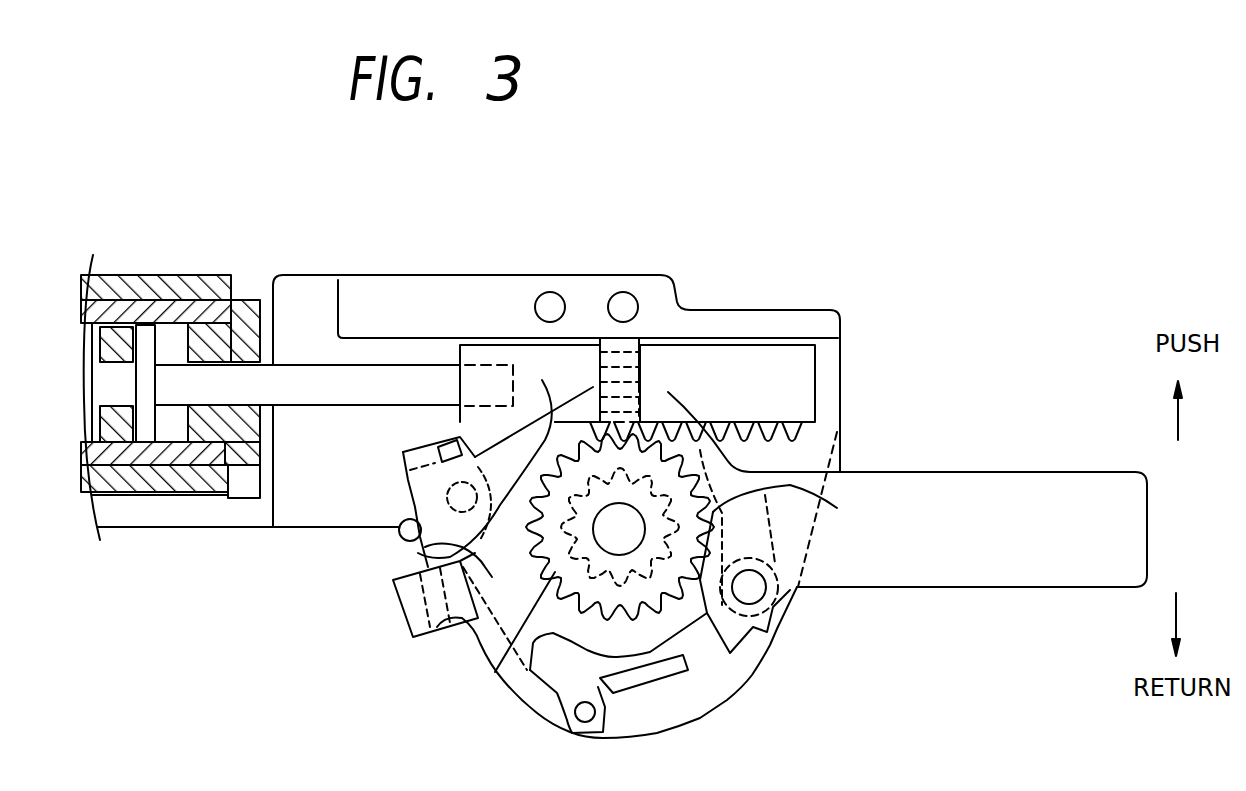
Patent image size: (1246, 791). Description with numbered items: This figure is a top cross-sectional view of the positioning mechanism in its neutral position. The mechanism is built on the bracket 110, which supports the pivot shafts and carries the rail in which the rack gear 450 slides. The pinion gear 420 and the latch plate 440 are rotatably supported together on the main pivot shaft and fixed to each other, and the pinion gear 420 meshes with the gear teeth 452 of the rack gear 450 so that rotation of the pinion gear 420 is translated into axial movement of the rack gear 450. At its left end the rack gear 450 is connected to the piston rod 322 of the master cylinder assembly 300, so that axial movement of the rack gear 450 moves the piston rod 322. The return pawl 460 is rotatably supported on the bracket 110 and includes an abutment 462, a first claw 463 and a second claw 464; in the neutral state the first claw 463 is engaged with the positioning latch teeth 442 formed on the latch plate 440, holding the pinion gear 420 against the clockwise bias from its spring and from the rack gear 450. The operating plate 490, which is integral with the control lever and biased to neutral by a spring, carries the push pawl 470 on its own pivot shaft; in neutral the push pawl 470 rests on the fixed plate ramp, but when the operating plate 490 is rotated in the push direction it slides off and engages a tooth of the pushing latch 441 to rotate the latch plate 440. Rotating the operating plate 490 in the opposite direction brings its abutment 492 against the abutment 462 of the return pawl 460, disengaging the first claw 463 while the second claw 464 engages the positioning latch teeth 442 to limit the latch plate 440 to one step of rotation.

The master cylinder assembly 300 is at (160, 548).
The piston rod 322 is at (294, 387).
The bracket 110 is at (333, 482).
The positioning latch teeth 442 is at (580, 379).
The rack gear 450 is at (722, 386).
The gear teeth 452 is at (805, 415).
The latch plate 440 is at (492, 670).
The pinion gear 420 is at (647, 655).
The second claw 464 is at (545, 596).
The operating plate 490 is at (1053, 553).
The push pawl 470 is at (767, 550).
The pushing latch 441 is at (837, 508).
The return pawl 460 is at (410, 487).
The first claw 463 is at (475, 457).
The abutment 462 is at (397, 543).
The abutment 492 is at (423, 640).